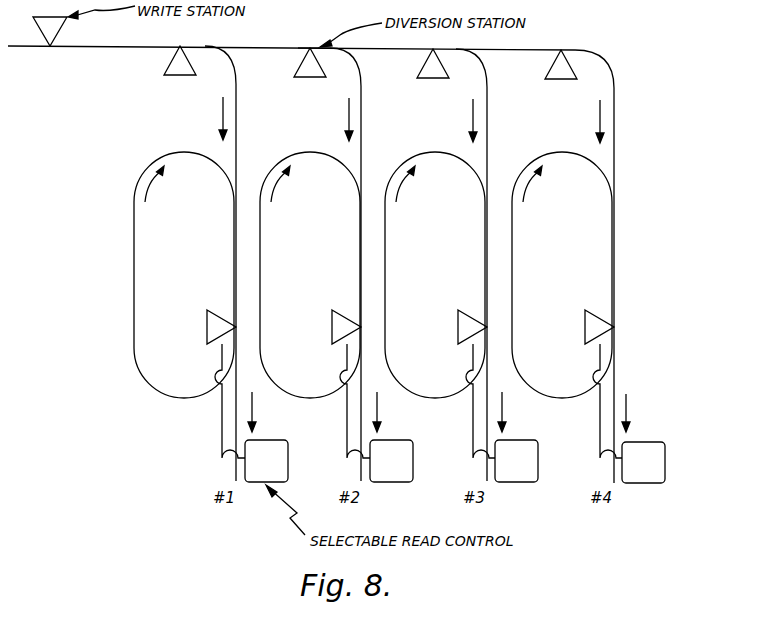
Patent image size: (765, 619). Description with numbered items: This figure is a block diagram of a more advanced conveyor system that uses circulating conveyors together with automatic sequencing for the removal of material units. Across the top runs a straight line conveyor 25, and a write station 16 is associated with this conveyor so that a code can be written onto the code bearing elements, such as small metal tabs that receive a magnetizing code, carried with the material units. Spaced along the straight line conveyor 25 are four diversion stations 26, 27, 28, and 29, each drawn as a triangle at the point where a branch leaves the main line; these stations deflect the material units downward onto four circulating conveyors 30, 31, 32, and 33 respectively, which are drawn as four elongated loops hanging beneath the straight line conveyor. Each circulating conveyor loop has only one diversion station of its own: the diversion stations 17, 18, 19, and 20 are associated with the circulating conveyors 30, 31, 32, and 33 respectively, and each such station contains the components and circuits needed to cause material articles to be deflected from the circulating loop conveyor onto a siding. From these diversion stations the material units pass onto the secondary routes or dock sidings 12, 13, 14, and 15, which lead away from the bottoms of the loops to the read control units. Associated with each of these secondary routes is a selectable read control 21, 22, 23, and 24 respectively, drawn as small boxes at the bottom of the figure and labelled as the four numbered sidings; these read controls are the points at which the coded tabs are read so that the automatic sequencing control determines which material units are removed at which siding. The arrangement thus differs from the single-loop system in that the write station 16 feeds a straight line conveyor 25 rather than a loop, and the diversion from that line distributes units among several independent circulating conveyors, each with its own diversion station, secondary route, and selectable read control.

The write station 16 is at (60, 29).
The straight line conveyor 25 is at (275, 47).
The diversion station 26 is at (171, 77).
The diversion station 27 is at (301, 79).
The diversion station 28 is at (424, 80).
The diversion station 29 is at (552, 81).
The circulating conveyor 30 is at (137, 257).
The circulating conveyor 31 is at (263, 257).
The circulating conveyor 32 is at (388, 257).
The circulating conveyor 33 is at (515, 257).
The diversion station 17 is at (207, 318).
The diversion station 18 is at (332, 318).
The diversion station 19 is at (458, 318).
The diversion station 20 is at (585, 318).
The secondary route 12 is at (237, 394).
The secondary route 13 is at (363, 394).
The secondary route 14 is at (489, 394).
The secondary route 15 is at (616, 394).
The selectable read control 21 is at (277, 441).
The selectable read control 22 is at (402, 441).
The selectable read control 23 is at (527, 441).
The selectable read control 24 is at (655, 441).